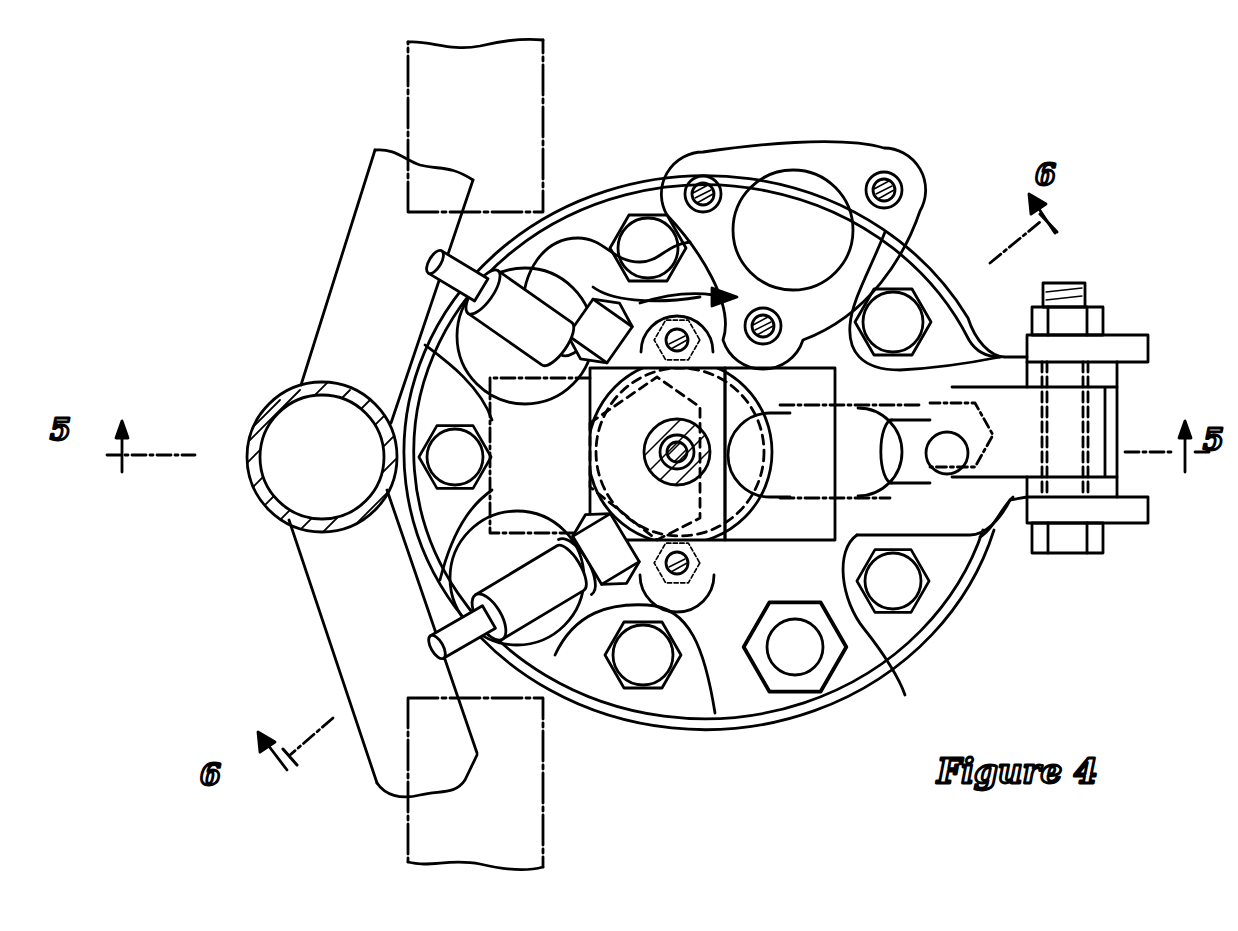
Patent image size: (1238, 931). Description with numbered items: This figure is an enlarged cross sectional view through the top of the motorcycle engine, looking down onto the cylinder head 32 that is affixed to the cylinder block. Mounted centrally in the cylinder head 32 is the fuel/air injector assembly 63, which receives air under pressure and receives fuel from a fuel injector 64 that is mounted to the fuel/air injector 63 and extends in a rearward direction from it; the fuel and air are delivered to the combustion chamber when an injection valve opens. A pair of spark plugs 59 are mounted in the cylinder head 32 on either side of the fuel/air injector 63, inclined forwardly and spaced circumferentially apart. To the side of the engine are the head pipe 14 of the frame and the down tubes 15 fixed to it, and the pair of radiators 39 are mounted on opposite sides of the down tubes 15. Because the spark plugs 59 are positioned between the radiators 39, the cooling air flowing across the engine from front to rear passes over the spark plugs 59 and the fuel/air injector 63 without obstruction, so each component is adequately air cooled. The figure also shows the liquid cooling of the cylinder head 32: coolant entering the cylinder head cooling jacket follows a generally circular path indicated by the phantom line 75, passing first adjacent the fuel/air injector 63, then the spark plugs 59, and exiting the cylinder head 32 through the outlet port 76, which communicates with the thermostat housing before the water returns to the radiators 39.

The head pipe 14 is at (263, 408).
The down tubes 15 is at (325, 285).
The cylinder head 32 is at (632, 178).
The radiators 39 is at (407, 112).
The spark plugs 59 is at (523, 287).
The fuel/air injector assembly 63 is at (785, 378).
The fuel injector 64 is at (838, 518).
The phantom line 75 is at (755, 578).
The outlet port 76 is at (823, 165).